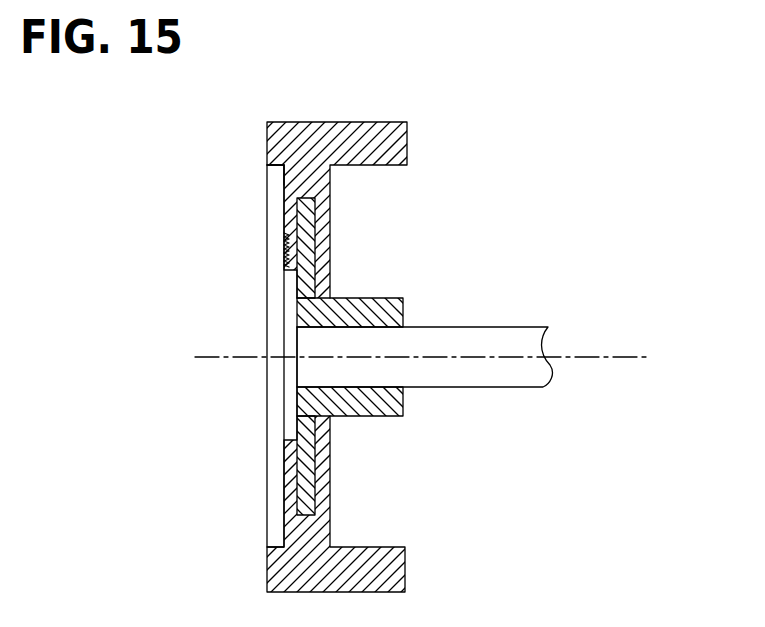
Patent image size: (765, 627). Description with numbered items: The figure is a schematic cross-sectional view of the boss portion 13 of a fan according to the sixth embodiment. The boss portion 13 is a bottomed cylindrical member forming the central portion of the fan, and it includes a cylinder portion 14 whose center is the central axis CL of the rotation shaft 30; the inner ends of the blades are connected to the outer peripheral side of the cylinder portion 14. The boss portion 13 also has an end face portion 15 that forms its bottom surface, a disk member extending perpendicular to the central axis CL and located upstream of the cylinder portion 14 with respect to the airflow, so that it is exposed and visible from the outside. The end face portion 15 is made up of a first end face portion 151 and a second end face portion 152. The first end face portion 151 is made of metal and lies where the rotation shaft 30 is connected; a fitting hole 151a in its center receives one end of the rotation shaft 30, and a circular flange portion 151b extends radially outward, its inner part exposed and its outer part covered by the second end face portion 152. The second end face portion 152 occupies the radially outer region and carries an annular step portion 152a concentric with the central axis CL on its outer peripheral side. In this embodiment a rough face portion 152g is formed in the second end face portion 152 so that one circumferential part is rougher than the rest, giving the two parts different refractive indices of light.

The boss portion 13 is at (318, 357).
The cylinder portion 14 is at (398, 573).
The end face portion 15 is at (318, 353).
The first end face portion 151 is at (343, 357).
The fitting hole 151a is at (368, 327).
The flange portion 151b is at (310, 222).
The second end face portion 152 is at (220, 353).
The step portion 152a is at (280, 167).
The rough face portion 152g is at (288, 243).
The rotation shaft 30 is at (537, 327).
The central axis CL is at (612, 356).